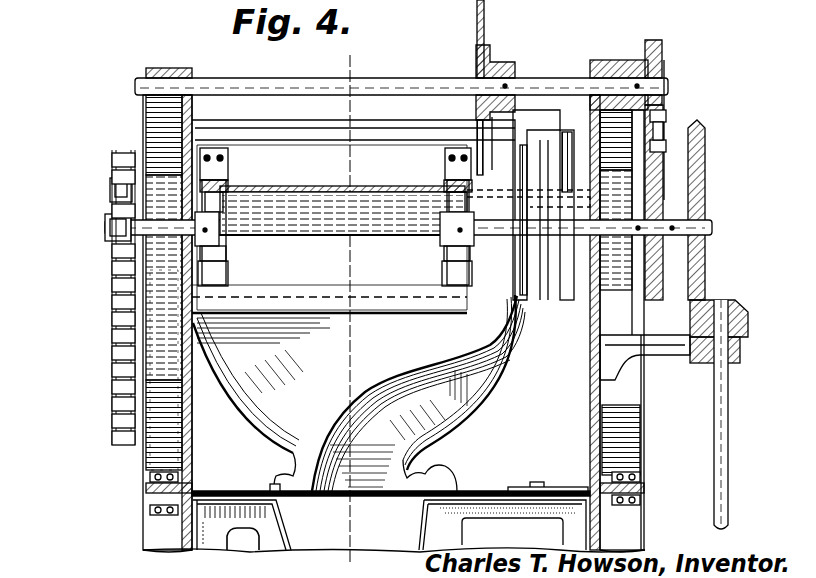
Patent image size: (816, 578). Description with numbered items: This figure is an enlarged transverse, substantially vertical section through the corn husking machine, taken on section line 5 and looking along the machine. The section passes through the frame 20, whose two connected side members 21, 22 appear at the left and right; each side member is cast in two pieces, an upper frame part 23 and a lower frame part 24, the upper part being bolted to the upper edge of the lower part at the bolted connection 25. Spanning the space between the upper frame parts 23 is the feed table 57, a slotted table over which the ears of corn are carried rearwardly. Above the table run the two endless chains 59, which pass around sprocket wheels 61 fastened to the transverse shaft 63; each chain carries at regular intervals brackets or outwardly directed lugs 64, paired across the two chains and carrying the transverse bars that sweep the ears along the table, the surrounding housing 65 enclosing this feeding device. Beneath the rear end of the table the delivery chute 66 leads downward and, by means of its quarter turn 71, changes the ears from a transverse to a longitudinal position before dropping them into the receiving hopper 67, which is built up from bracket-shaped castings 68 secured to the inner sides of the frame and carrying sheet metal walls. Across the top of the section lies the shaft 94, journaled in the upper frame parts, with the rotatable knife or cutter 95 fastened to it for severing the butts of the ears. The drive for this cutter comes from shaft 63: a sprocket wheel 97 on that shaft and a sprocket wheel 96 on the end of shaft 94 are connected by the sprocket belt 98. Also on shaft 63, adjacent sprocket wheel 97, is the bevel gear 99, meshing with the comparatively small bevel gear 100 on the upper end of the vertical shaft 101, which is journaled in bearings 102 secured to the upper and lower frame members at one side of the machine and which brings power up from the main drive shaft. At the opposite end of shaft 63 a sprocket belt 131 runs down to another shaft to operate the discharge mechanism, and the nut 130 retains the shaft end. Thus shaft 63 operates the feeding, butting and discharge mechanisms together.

The section line 5 is at (350, 307).
The frame 20 is at (590, 445).
The side member 21 is at (632, 385).
The side member 22 is at (192, 412).
The upper frame part 23 is at (180, 325).
The lower frame part 24 is at (150, 527).
The bolted connection 25 is at (150, 475).
The feed table 57 is at (405, 212).
The endless chains 59 is at (228, 185).
The sprocket wheels 61 is at (228, 265).
The shaft 63 is at (320, 236).
The brackets or outwardly directed lugs 64 is at (220, 148).
The housing 65 is at (312, 157).
The delivery chute 66 is at (359, 393).
The receiving hopper 67 is at (266, 525).
The castings 68 is at (518, 493).
The quarter turn 71 is at (440, 360).
The shaft 94 is at (545, 78).
The rotatable knife or cutter 95 is at (486, 35).
The sprocket wheel 96 is at (664, 60).
The sprocket wheel 97 is at (663, 182).
The sprocket belt 98 is at (666, 118).
The bevel gear 99 is at (705, 265).
The bevel gear 100 is at (735, 312).
The shaft 101 is at (728, 440).
The bearings 102 is at (740, 355).
The nut 130 is at (124, 168).
The sprocket belt 131 is at (112, 360).